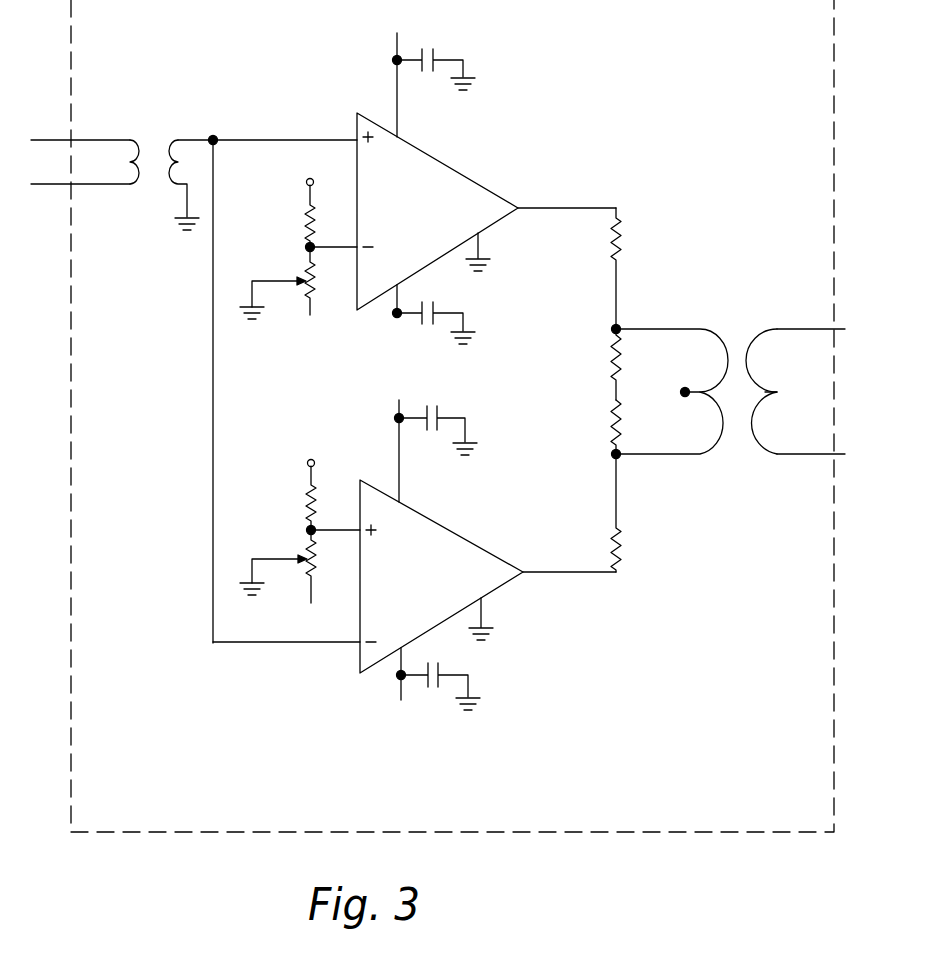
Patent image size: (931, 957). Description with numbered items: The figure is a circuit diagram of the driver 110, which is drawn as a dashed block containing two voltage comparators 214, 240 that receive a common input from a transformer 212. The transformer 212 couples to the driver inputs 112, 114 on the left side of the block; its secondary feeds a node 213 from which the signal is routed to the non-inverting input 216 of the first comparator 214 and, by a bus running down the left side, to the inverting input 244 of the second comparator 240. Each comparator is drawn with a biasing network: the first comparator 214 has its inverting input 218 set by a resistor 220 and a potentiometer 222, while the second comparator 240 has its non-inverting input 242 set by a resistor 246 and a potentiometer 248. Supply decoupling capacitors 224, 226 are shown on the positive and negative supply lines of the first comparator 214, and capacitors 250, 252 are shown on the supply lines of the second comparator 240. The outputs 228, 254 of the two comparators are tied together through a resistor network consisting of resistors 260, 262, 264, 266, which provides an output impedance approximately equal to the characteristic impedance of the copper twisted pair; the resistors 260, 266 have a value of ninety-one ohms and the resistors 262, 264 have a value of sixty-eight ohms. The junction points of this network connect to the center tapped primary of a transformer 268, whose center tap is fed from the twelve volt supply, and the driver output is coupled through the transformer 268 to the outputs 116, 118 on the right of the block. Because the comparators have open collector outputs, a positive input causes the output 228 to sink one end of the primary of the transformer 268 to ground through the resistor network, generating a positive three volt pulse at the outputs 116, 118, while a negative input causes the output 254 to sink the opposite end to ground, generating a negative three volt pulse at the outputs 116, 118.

The driver 110 is at (625, 833).
The driver input 112 is at (64, 140).
The driver input 114 is at (64, 185).
The output 116 is at (838, 329).
The output 118 is at (835, 455).
The transformer 212 is at (125, 191).
The input node 213 is at (171, 139).
The voltage comparator 214 is at (423, 171).
The non-inverting input of first comparator 216 is at (357, 136).
The inverting input of first comparator 218 is at (357, 250).
The resistor R3 220 is at (300, 220).
The potentiometer R4 222 is at (304, 268).
The capacitor C1 224 is at (450, 46).
The capacitor C2 226 is at (428, 327).
The output 228 is at (522, 205).
The voltage comparator 240 is at (364, 649).
The non-inverting input of second comparator 242 is at (352, 529).
The inverting input of second comparator 244 is at (358, 645).
The resistor R3 246 is at (305, 507).
The potentiometer R4 248 is at (305, 553).
The capacitor C3 250 is at (465, 400).
The capacitor C4 252 is at (445, 670).
The output 254 is at (540, 555).
The resistor 260 is at (620, 237).
The resistor 262 is at (623, 351).
The resistor 264 is at (623, 429).
The resistor 266 is at (620, 537).
The transformer 268 is at (738, 340).